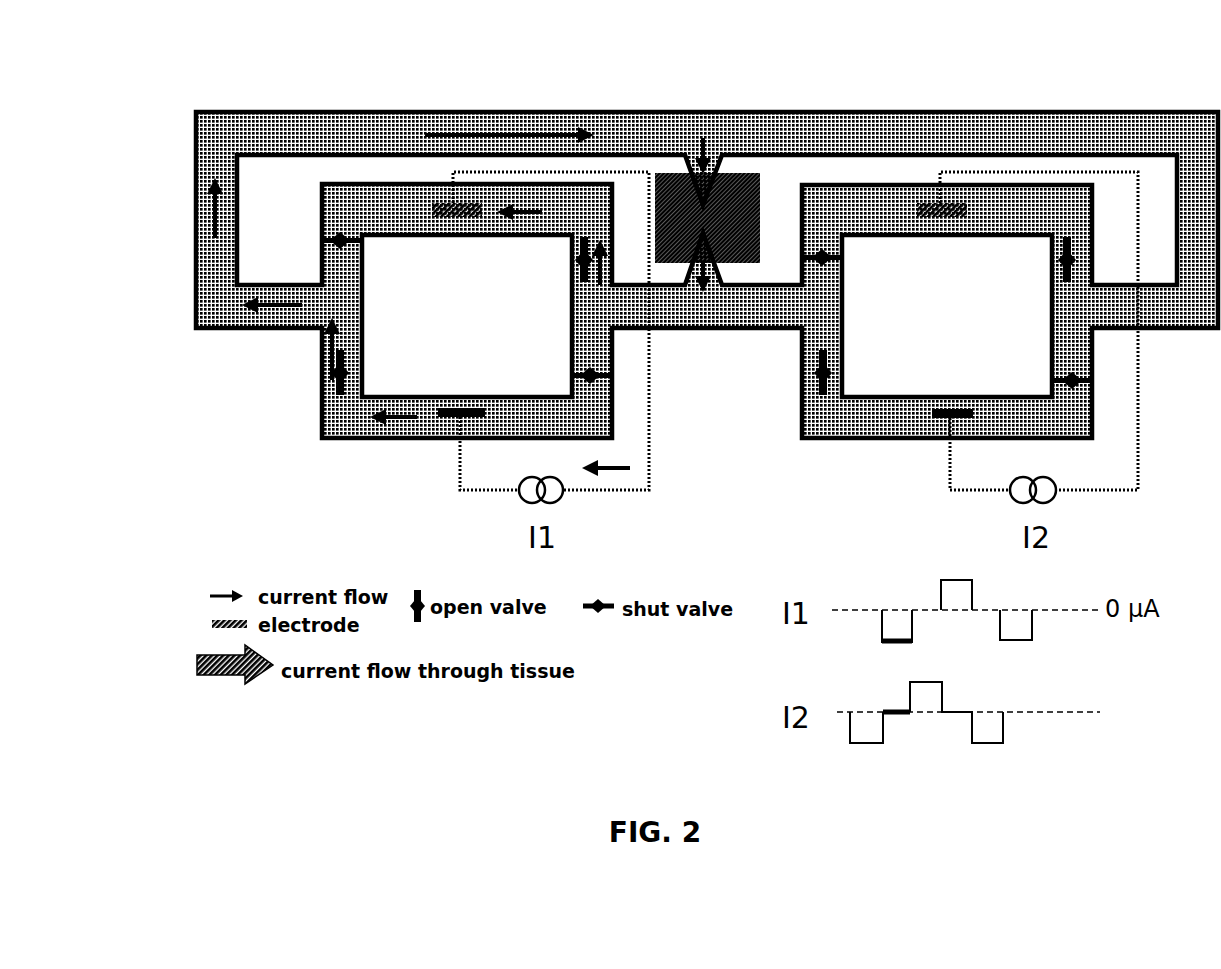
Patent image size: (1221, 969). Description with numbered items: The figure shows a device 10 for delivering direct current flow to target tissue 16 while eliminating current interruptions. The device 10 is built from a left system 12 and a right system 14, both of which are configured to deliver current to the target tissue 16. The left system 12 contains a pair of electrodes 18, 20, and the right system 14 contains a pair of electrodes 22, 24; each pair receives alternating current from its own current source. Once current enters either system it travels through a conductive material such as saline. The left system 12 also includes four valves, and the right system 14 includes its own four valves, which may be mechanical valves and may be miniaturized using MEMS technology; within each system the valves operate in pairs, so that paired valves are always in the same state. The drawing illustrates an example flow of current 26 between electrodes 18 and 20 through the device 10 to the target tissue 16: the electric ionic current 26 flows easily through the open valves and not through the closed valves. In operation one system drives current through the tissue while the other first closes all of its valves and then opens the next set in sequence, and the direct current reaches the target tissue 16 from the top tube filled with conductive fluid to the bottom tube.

The device 10 is at (258, 413).
The left system 12 is at (363, 441).
The right system 14 is at (853, 443).
The target tissue 16 is at (680, 180).
The electrode 18 is at (443, 418).
The electrode 20 is at (437, 203).
The electrode 22 is at (933, 417).
The electrode 24 is at (930, 203).
The flow of current 26 is at (532, 125).